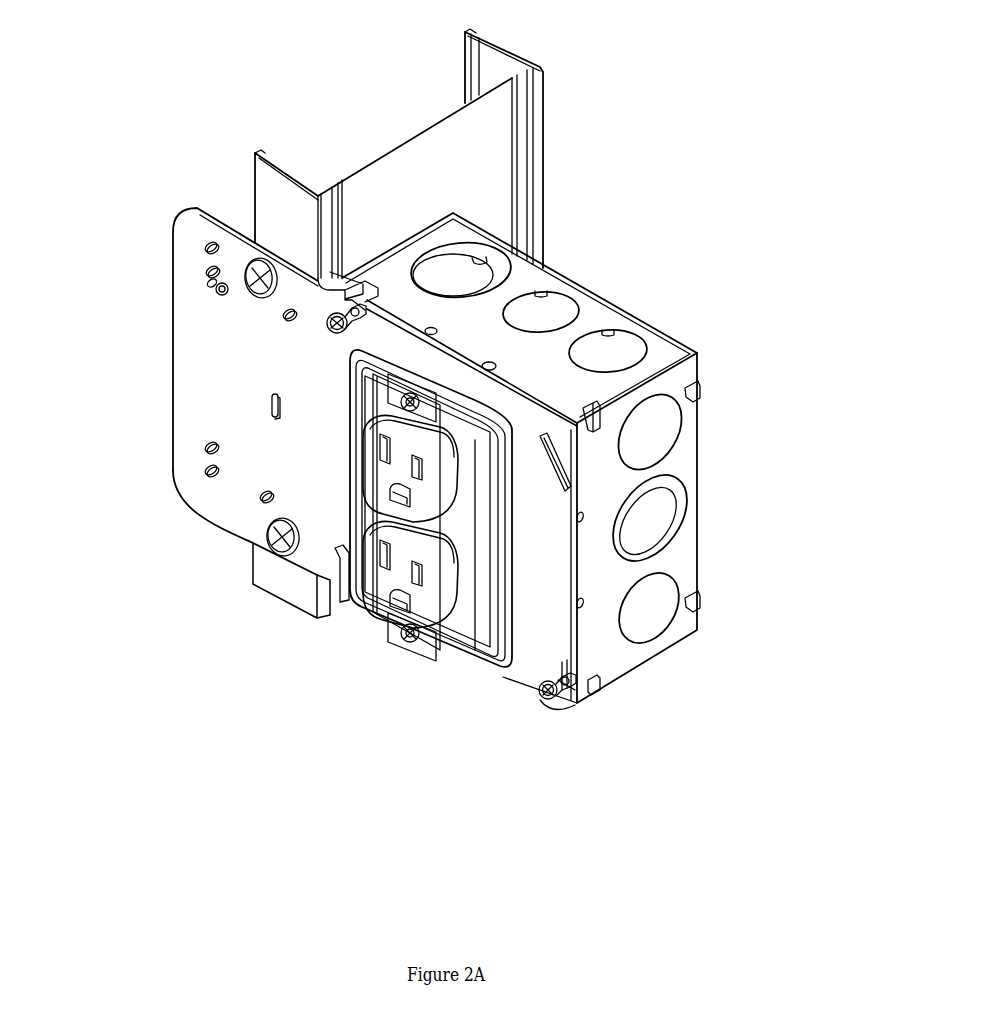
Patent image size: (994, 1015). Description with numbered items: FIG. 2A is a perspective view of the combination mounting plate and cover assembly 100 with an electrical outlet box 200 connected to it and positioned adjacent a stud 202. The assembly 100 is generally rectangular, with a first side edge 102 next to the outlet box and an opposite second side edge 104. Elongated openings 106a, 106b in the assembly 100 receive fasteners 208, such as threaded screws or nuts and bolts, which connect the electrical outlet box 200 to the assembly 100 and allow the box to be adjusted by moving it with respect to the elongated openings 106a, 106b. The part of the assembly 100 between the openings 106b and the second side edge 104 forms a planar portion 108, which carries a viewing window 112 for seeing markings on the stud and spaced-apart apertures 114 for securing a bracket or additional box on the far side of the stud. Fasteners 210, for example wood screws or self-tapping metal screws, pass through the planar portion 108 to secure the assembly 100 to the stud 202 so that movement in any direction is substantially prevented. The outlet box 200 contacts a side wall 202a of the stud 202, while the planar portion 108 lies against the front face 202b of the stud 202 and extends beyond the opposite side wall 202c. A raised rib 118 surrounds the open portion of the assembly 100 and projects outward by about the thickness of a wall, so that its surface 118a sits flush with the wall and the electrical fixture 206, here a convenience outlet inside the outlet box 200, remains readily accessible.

The combination mounting plate and cover assembly 100 is at (183, 204).
The first side edge 102 is at (577, 544).
The second side edge 104 is at (190, 393).
The openings 106a is at (567, 468).
The openings 106b is at (337, 560).
The planar portion 108 is at (213, 415).
The viewing window 112 is at (268, 409).
The apertures 114 is at (207, 243).
The raised rib 118 is at (430, 377).
The surface of rib 118a is at (445, 403).
The electrical outlet box 200 is at (620, 342).
The stud 202 is at (293, 178).
The side wall of stud 202a is at (330, 213).
The front face of stud 202b is at (287, 229).
The opposite side wall of stud 202c is at (256, 152).
The electrical fixture 206 is at (425, 605).
The fasteners 208 is at (326, 326).
The fasteners 210 is at (254, 258).